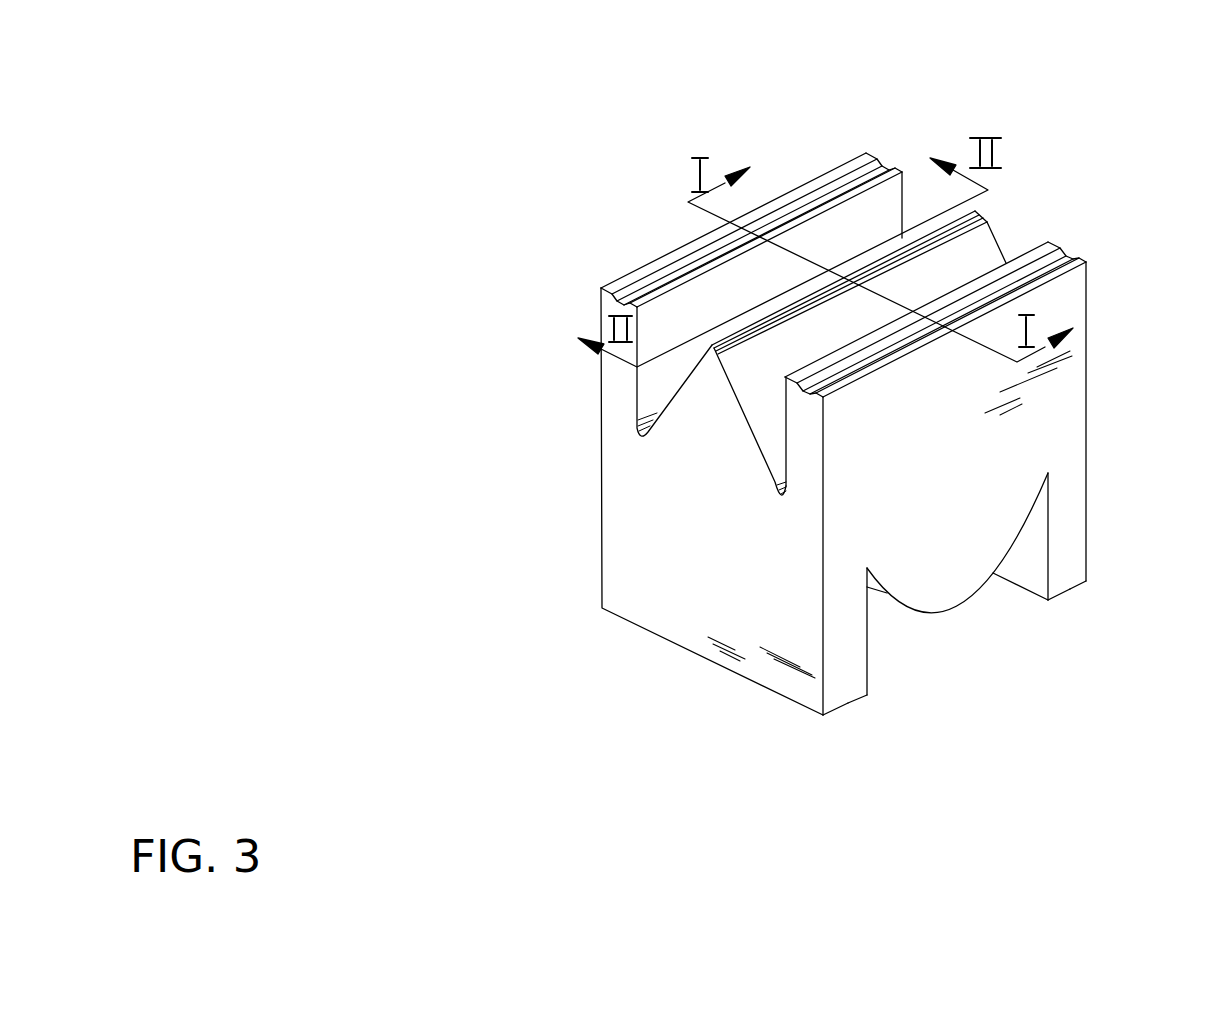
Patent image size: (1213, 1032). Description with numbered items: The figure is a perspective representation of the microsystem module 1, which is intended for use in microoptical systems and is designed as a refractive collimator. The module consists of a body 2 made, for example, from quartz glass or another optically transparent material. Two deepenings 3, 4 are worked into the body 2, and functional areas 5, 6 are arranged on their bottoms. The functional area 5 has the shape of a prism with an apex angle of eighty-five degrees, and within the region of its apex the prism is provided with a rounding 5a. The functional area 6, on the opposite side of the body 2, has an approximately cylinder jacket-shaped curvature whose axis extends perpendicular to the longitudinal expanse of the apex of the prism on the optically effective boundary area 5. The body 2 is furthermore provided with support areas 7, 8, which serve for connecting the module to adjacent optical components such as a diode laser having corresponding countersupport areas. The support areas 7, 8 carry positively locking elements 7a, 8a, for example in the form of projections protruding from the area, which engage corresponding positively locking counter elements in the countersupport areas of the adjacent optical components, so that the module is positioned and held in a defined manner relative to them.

The microsystem module 1 is at (494, 289).
The body 2 is at (1035, 435).
The deepening 3 is at (920, 212).
The deepening 4 is at (898, 640).
The functional area 5 is at (980, 257).
The rounding 5a is at (965, 217).
The functional area 6 is at (947, 610).
The support area 7 is at (888, 178).
The positively locking element 7a is at (875, 165).
The support area 8 is at (863, 698).
The positively locking element 8a is at (845, 706).